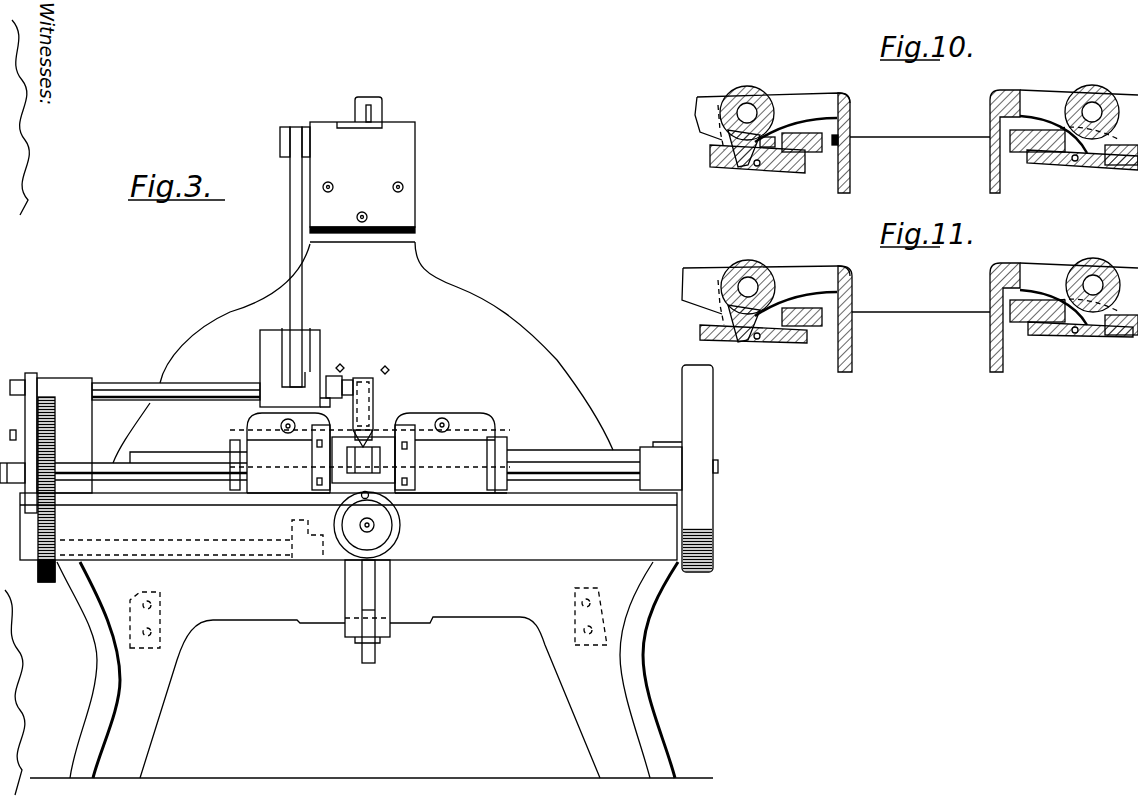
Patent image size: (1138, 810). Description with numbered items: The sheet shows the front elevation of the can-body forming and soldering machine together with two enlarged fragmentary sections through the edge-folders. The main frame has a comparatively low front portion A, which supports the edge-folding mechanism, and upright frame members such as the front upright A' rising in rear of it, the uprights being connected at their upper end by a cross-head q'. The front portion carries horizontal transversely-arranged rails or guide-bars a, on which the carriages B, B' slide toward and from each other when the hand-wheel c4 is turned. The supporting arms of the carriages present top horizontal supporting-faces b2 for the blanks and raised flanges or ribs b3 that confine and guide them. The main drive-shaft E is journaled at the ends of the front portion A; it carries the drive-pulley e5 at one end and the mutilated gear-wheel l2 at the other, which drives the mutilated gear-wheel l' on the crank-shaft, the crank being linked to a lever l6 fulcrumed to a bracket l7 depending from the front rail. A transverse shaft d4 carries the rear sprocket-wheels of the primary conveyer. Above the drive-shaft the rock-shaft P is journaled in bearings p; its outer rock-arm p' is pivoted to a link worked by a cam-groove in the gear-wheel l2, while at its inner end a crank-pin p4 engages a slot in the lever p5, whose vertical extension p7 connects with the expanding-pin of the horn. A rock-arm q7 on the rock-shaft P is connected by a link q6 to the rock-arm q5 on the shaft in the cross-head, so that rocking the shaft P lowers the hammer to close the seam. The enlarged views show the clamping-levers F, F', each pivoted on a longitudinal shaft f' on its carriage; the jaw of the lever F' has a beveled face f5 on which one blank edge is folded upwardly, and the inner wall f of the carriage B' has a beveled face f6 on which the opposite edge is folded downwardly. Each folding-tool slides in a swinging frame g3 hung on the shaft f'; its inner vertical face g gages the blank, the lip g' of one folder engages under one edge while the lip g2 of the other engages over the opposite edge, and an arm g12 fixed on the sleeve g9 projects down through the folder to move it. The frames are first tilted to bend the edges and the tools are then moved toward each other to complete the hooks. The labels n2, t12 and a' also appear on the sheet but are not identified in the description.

In FIG. 3, the low front portion of the main frame A is at (367, 670).
In FIG. 3, the rails or guide-bars a is at (348, 526).
In FIG. 3, the upright frame member A' is at (363, 352).
In FIG. 3, the hand-wheel c4 is at (400, 527).
In FIG. 3, the bracket l7 is at (393, 600).
In FIG. 3, the lever l6 is at (376, 660).
In FIG. 3, the drive-pulley e5 is at (694, 468).
In FIG. 3, the shaft d4 is at (571, 462).
In FIG. 3, the main drive-shaft E is at (148, 463).
In FIG. 3, the rock-arm p' is at (39, 428).
In FIG. 3, the bolt n2 is at (25, 402).
In FIG. 3, the bearings p is at (183, 410).
In FIG. 3, the mutilated gear-wheel l2 is at (56, 470).
In FIG. 3, the mutilated gear-wheel l' is at (45, 599).
In FIG. 3, the rock-shaft P is at (195, 384).
In FIG. 3, the cross-head q' is at (362, 182).
In FIG. 3, the stud t12 is at (382, 104).
In FIG. 3, the rock-arm q5 is at (280, 135).
In FIG. 3, the link q6 is at (290, 228).
In FIG. 3, the rock-arm q7 is at (303, 365).
In FIG. 3, the crank-pin p4 is at (328, 378).
In FIG. 3, the lever p5 is at (349, 382).
In FIG. 3, the vertical extension p7 is at (368, 402).
In FIG. 3, the clamping-lever F' is at (275, 447).
In FIG. 10, the clamping-lever F' is at (1079, 101).
In FIG. 11, the clamping-lever F' is at (1079, 275).
In FIG. 3, the clamping-lever F is at (445, 443).
In FIG. 10, the clamping-lever F is at (772, 98).
In FIG. 11, the clamping-lever F is at (766, 273).
In FIG. 3, the carriage B is at (280, 459).
In FIG. 3, the carriage B' is at (451, 459).
In FIG. 3, the supporting-faces b2 is at (335, 455).
In FIG. 3, the flanges or ribs b3 is at (310, 432).
In FIG. 3, the shaft f' is at (445, 396).
In FIG. 10, the shaft f' is at (919, 92).
In FIG. 11, the shaft f' is at (920, 266).
In FIG. 10, the inner wall f is at (929, 142).
In FIG. 11, the inner wall f is at (929, 317).
In FIG. 10, the sleeve g9 is at (735, 100).
In FIG. 11, the sleeve g9 is at (735, 275).
In FIG. 10, the swinging frame g3 is at (715, 160).
In FIG. 11, the swinging frame g3 is at (795, 343).
In FIG. 10, the arm g12 is at (740, 170).
In FIG. 11, the arm g12 is at (745, 345).
In FIG. 10, the vertical faces g is at (934, 146).
In FIG. 11, the vertical faces g is at (934, 306).
In FIG. 10, the lip g2 is at (824, 153).
In FIG. 10, the beveled face f6 is at (840, 141).
In FIG. 10, the bracket a' is at (901, 161).
In FIG. 11, the bracket a' is at (901, 342).
In FIG. 10, the beveled face f5 is at (990, 130).
In FIG. 10, the lip g' is at (1015, 171).